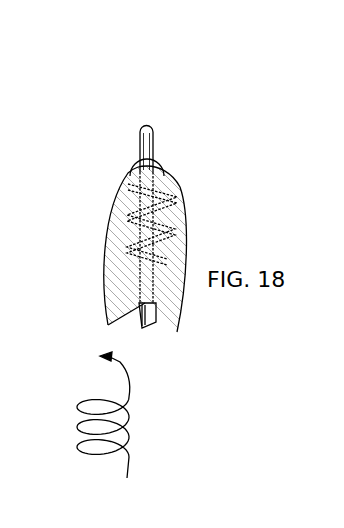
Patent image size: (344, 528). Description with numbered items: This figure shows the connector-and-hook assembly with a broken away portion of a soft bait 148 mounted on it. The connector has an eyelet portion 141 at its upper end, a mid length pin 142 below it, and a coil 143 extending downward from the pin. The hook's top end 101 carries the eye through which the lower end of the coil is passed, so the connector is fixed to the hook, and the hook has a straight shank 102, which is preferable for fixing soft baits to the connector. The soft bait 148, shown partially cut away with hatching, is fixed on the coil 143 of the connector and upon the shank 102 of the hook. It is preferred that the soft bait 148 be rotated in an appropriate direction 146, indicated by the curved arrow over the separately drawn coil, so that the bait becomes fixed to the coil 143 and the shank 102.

The top end 101 is at (145, 112).
The eyelet portion 141 is at (128, 146).
The mid length pin 142 is at (159, 182).
The coil 143 is at (116, 229).
The straight shank 102 is at (163, 312).
The soft bait 148 is at (192, 306).
The direction 146 is at (100, 429).